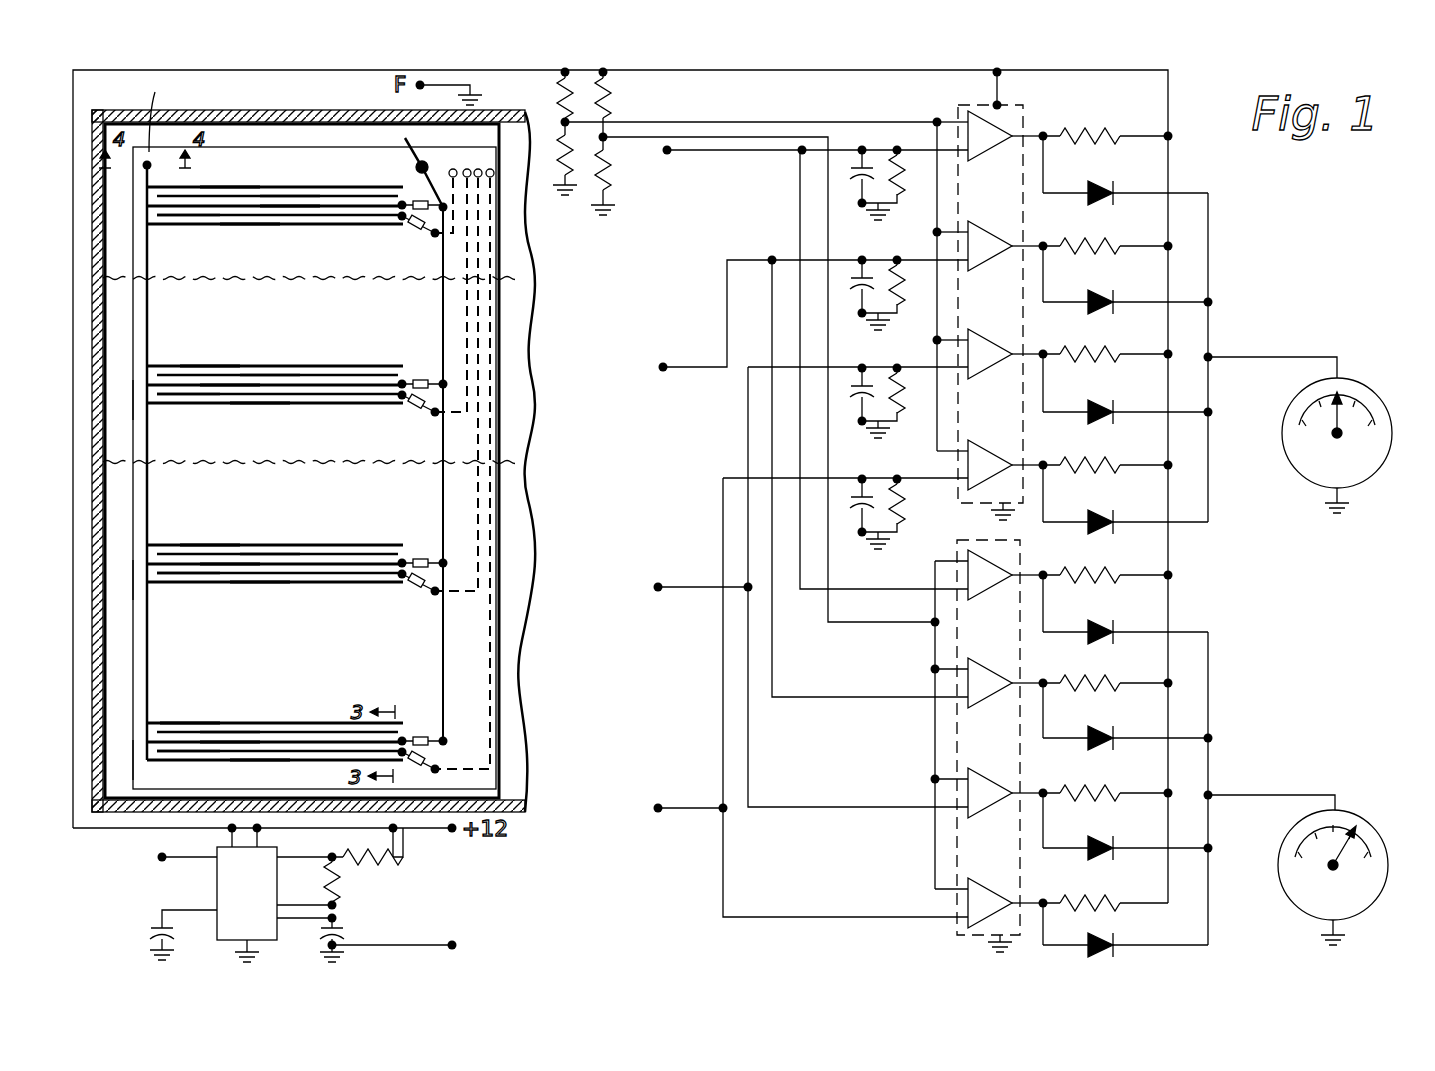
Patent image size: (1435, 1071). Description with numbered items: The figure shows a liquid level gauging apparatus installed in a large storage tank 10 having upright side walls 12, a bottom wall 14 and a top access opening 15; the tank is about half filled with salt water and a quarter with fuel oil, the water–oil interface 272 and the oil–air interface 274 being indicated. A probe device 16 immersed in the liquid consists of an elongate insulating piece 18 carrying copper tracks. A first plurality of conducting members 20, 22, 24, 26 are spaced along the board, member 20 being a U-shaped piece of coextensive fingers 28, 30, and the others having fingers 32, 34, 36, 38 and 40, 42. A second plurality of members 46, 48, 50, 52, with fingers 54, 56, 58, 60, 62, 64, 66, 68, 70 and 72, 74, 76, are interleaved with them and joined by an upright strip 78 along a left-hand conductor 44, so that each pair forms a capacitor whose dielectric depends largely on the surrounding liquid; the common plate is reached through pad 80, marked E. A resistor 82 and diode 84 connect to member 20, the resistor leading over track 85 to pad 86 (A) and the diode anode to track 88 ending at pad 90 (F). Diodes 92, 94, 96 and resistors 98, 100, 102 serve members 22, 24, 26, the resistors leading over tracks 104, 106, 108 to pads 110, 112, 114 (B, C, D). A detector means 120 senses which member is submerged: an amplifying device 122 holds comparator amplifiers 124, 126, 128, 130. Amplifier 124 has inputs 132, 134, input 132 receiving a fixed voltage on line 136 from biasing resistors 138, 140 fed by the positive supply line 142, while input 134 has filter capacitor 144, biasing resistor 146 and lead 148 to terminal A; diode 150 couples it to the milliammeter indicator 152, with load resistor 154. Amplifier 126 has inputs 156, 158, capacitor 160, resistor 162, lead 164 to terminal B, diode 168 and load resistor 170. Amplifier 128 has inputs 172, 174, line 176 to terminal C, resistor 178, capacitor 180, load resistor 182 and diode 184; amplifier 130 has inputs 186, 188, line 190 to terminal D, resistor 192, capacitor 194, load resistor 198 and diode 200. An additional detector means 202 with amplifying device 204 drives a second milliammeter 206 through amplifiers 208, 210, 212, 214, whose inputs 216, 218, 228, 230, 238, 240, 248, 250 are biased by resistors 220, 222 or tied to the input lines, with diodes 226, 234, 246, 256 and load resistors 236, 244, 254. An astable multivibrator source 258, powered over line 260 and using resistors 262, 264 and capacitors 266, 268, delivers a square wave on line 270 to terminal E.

The storage tank 10 is at (314, 473).
The side walls 12 is at (98, 562).
The bottom wall 14 is at (526, 818).
The top access opening 15 is at (290, 114).
The probe device 16 is at (521, 610).
The insulating piece 18 is at (498, 733).
The conducting member 20 is at (319, 221).
The conducting member 22 is at (307, 405).
The conducting member 24 is at (315, 581).
The conducting member 26 is at (278, 726).
The finger 28 is at (266, 196).
The finger 30 is at (280, 214).
The finger 32 is at (272, 374).
The finger 34 is at (246, 404).
The finger 36 is at (250, 544).
The finger 38 is at (242, 584).
The finger 40 is at (230, 730).
The finger 42 is at (262, 758).
The common conductor 44 is at (156, 326).
The conducting member 46 is at (130, 218).
The conducting member 48 is at (130, 406).
The conducting member 50 is at (130, 580).
The conducting member 52 is at (130, 750).
The finger 54 is at (234, 186).
The finger 56 is at (206, 216).
The finger 58 is at (258, 226).
The finger 60 is at (190, 366).
The finger 62 is at (192, 394).
The finger 64 is at (232, 400).
The finger 66 is at (194, 544).
The finger 68 is at (194, 578).
The finger 70 is at (230, 584).
The finger 72 is at (170, 722).
The finger 74 is at (174, 754).
The finger 76 is at (212, 758).
The upright strip 78 is at (147, 490).
The terminal pad 80 is at (151, 156).
The resistor 82 is at (412, 230).
The diode 84 is at (408, 202).
The track 85 is at (450, 235).
The terminal pad 86 is at (452, 168).
The track 88 is at (443, 323).
The terminal pad 90 is at (407, 163).
The diode 92 is at (417, 380).
The diode 94 is at (416, 556).
The diode 96 is at (416, 738).
The resistor 98 is at (416, 414).
The resistor 100 is at (418, 588).
The resistor 102 is at (426, 758).
The track 104 is at (450, 301).
The track 106 is at (470, 488).
The track 108 is at (487, 656).
The terminal pad 110 is at (483, 384).
The terminal pad 112 is at (478, 195).
The terminal pad 114 is at (491, 178).
The detector means 120 is at (1252, 250).
The amplifying device 122 is at (1041, 122).
The amplifier 124 is at (998, 146).
The amplifier 126 is at (979, 252).
The amplifier 128 is at (979, 360).
The amplifier 130 is at (1005, 455).
The input terminal 132 is at (937, 120).
The input terminal 134 is at (948, 150).
The line 136 is at (878, 120).
The biasing resistor 138 is at (557, 84).
The biasing resistor 140 is at (558, 158).
The positive supply line 142 is at (760, 80).
The filter capacitor 144 is at (853, 180).
The biasing resistor 146 is at (910, 172).
The lead 148 is at (760, 160).
The isolating diode 150 is at (1100, 188).
The indicator 152 is at (1373, 379).
The load resistor 154 is at (1096, 130).
The input terminal 156 is at (961, 226).
The input terminal 158 is at (948, 264).
The filter capacitor 160 is at (853, 290).
The biasing resistor 162 is at (910, 282).
The lead 164 is at (727, 312).
The isolating diode 168 is at (1108, 300).
The load resistor 170 is at (1096, 244).
The input terminal 172 is at (952, 332).
The input terminal 174 is at (948, 368).
The line 176 is at (695, 579).
The resistor 178 is at (912, 394).
The capacitor 180 is at (853, 400).
The load resistor 182 is at (1096, 344).
The diode 184 is at (1105, 408).
The input terminal 186 is at (954, 450).
The input terminal 188 is at (944, 480).
The line 190 is at (702, 806).
The resistor 192 is at (907, 508).
The capacitor 194 is at (853, 510).
The load resistor 198 is at (1094, 454).
The diode 200 is at (1102, 518).
The additional detector means 202 is at (1237, 916).
The additional amplifying device 204 is at (960, 952).
The additional indicator 206 is at (1373, 807).
The amplifier 208 is at (976, 582).
The amplifier 210 is at (984, 672).
The amplifier 212 is at (984, 782).
The amplifier 214 is at (984, 880).
The input terminal 216 is at (947, 560).
The input terminal 218 is at (950, 596).
The bias resistor 220 is at (608, 98).
The bias resistor 222 is at (612, 184).
The isolation diode 226 is at (1104, 630).
The resistor 228 is at (1098, 576).
The input terminal 230 is at (932, 698).
The isolation diode 234 is at (1100, 736).
The resistor 236 is at (1098, 682).
The input terminal 238 is at (934, 776).
The input terminal 240 is at (932, 804).
The load resistor 244 is at (1096, 792).
The diode 246 is at (1102, 848).
The input terminal 248 is at (936, 888).
The input terminal 250 is at (934, 920).
The resistor 254 is at (1100, 902).
The diode 256 is at (1106, 934).
The source of a.c. voltage 258 is at (425, 904).
The line 260 is at (328, 838).
The resistor 262 is at (396, 860).
The resistor 264 is at (340, 882).
The capacitor 266 is at (356, 926).
The capacitor 268 is at (160, 924).
The line 270 is at (204, 856).
The interface 272 is at (518, 456).
The interface 274 is at (510, 278).